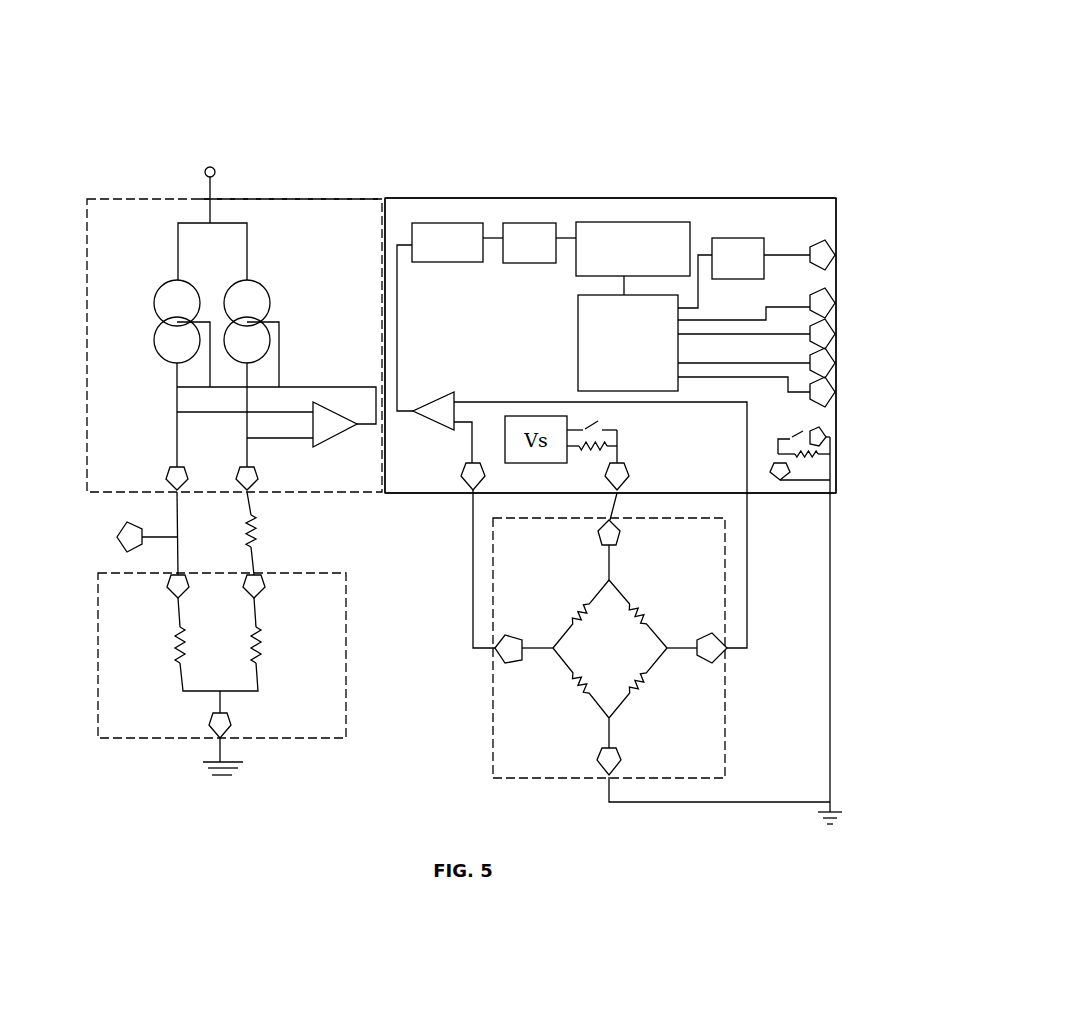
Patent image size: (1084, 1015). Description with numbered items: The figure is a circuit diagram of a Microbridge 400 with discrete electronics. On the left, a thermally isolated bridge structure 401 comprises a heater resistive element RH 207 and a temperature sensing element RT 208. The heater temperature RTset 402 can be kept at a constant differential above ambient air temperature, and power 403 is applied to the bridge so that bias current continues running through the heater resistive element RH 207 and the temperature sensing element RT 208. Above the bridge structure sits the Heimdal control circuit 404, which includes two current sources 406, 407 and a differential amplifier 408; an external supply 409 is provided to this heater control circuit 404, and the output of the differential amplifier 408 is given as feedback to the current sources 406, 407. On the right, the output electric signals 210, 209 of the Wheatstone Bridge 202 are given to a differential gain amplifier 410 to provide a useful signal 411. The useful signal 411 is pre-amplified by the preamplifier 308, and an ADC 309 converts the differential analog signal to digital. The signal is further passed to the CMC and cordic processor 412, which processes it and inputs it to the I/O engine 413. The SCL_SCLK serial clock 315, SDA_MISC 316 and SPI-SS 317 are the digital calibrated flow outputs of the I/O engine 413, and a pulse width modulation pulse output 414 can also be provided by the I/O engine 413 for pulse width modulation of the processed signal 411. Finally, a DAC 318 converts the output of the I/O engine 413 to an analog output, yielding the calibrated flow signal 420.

The Microbridge 400 is at (676, 53).
The current source 407 is at (132, 197).
The current source 406 is at (307, 197).
The Heimdal control circuit 404 is at (335, 197).
The differential amplifier 408 is at (365, 493).
The external supply 409 is at (212, 165).
The power 403 is at (118, 532).
The heater temperature RTset 402 is at (256, 542).
The thermally isolated bridge structure 401 is at (320, 570).
The temperature sensing element RT 208 is at (345, 692).
The heater resistive element RH 207 is at (140, 740).
The preamplifier 308 is at (447, 197).
The ADC 309 is at (538, 197).
The useful signal 411 is at (505, 197).
The CMC and cordic processor 412 is at (647, 197).
The I/O engine 413 is at (728, 197).
The DAC 318 is at (768, 197).
The calibrated flow signal 420 is at (836, 255).
The SCL_SCLK serial clock 315 is at (836, 303).
The SDA_MISC 316 is at (836, 333).
The SPI-SS 317 is at (836, 363).
The pulse width modulation pulse output 414 is at (836, 392).
The differential gain amplifier 410 is at (440, 495).
The Wheatstone Bridge 202 is at (748, 550).
The output electric signal 210 is at (495, 650).
The output electric signal 209 is at (747, 648).